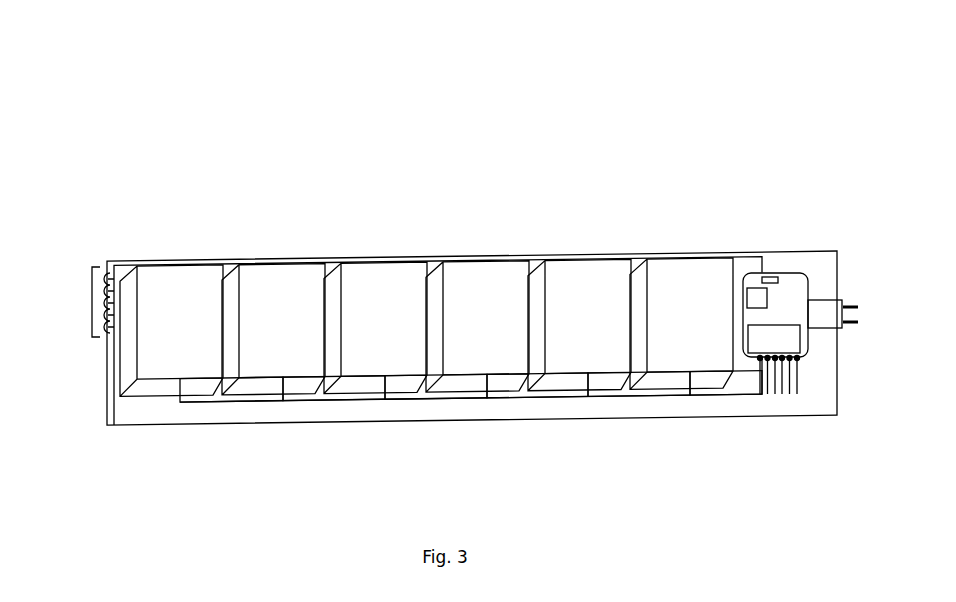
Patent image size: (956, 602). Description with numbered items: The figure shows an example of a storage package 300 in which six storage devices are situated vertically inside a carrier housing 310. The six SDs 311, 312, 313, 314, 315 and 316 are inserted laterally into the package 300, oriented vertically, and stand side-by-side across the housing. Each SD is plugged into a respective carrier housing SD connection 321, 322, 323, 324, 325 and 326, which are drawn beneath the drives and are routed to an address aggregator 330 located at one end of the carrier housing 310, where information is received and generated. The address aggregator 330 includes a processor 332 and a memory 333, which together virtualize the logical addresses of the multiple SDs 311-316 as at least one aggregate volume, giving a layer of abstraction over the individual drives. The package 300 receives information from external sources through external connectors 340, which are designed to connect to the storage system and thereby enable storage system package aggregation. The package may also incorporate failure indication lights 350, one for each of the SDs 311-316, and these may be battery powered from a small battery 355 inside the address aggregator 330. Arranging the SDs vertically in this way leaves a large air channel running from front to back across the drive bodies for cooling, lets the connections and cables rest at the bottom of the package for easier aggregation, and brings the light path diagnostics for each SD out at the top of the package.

The package 300 is at (543, 190).
The carrier housing 310 is at (150, 426).
The SD 311 is at (171, 330).
The SD 312 is at (273, 329).
The SD 313 is at (375, 327).
The SD 314 is at (477, 326).
The SD 315 is at (579, 324).
The SD 316 is at (681, 323).
The carrier housing SD connection 321 is at (227, 402).
The carrier housing SD connection 322 is at (327, 402).
The carrier housing SD connection 323 is at (428, 402).
The carrier housing SD connection 324 is at (543, 400).
The carrier housing SD connection 325 is at (630, 399).
The carrier housing SD connection 326 is at (715, 398).
The address aggregator 330 is at (804, 343).
The processor 332 is at (774, 359).
The memory 333 is at (753, 307).
The external connectors 340 is at (833, 314).
The failure indication lights 350 is at (92, 296).
The battery 355 is at (771, 277).